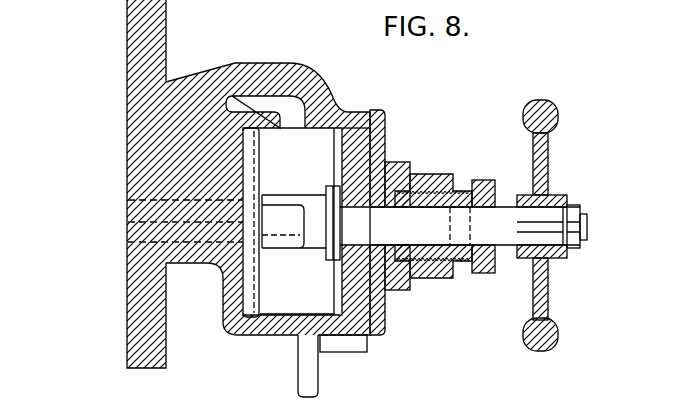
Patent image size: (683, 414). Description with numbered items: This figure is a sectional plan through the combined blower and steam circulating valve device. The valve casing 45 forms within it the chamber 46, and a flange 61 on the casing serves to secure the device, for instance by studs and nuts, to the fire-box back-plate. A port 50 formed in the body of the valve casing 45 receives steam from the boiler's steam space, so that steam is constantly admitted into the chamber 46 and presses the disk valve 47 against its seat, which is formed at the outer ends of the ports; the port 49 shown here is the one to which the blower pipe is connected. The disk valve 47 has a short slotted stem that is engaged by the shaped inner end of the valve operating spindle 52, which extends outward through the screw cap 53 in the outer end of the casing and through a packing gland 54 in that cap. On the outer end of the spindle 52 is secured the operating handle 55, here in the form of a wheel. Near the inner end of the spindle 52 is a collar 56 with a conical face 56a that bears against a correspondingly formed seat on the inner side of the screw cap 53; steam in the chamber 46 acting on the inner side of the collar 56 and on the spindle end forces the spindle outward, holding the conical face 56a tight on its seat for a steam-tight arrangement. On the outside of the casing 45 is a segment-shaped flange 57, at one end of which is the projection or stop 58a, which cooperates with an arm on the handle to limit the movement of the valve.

The flange 61 is at (150, 27).
The port 50 is at (290, 110).
The valve casing 45 is at (247, 328).
The disk valve 47 is at (250, 258).
The chamber 46 is at (285, 293).
The port 49 is at (128, 221).
The collar 56 is at (322, 162).
The screw cap 53 is at (372, 310).
The conical face 56a is at (350, 208).
The valve operating spindle 52 is at (425, 225).
The packing gland 54 is at (462, 262).
The operating handle 55 is at (538, 162).
The flange 57 is at (315, 370).
The stop 58a is at (350, 342).